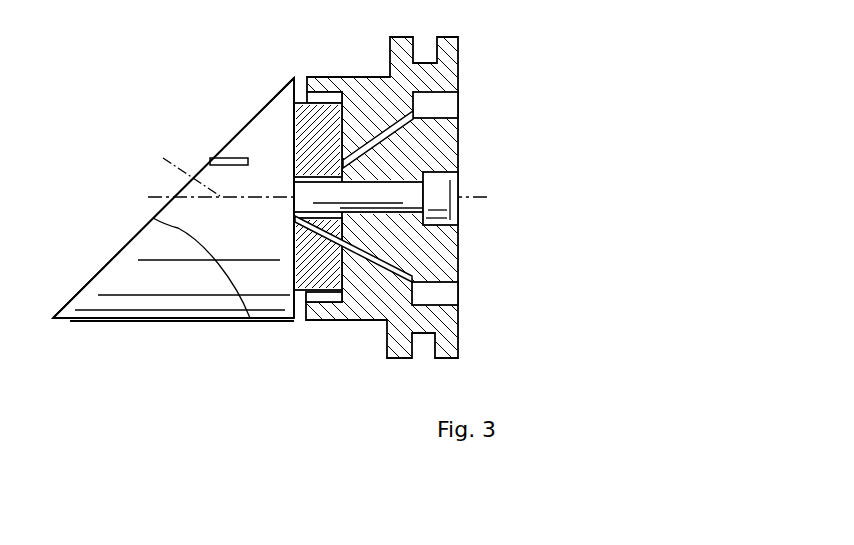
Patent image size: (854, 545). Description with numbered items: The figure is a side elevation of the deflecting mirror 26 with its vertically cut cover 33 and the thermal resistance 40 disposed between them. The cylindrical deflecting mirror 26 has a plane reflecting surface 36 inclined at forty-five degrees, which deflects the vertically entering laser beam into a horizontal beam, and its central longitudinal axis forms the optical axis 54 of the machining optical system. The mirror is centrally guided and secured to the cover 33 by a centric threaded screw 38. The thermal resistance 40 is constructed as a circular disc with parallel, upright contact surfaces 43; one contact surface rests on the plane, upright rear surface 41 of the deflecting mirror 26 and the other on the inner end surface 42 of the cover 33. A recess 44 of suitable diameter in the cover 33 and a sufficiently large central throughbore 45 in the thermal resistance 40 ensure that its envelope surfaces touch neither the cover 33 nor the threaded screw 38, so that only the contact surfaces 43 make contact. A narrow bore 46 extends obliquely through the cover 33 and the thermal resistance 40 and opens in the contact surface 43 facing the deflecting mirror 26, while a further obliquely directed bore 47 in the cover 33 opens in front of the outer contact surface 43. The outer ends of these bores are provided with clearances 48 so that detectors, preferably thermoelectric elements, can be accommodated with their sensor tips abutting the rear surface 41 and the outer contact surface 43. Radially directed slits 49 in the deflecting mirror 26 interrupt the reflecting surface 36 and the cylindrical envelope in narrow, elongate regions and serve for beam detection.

The deflecting mirror 26 is at (146, 302).
The cover 33 is at (452, 70).
The plane reflecting surface 36 is at (183, 185).
The threaded screw 38 is at (446, 183).
The thermal resistance 40 is at (300, 117).
The rear surface 41 is at (294, 306).
The inner end surface 42 is at (333, 110).
The contact surfaces 43 is at (289, 270).
The recess 44 is at (322, 298).
The throughbore 45 is at (293, 216).
The narrow bore 46 is at (384, 268).
The obliquely directed bore 47 is at (372, 130).
The clearances 48 is at (450, 100).
The slits 49 is at (228, 157).
The optical axis 54 is at (180, 169).